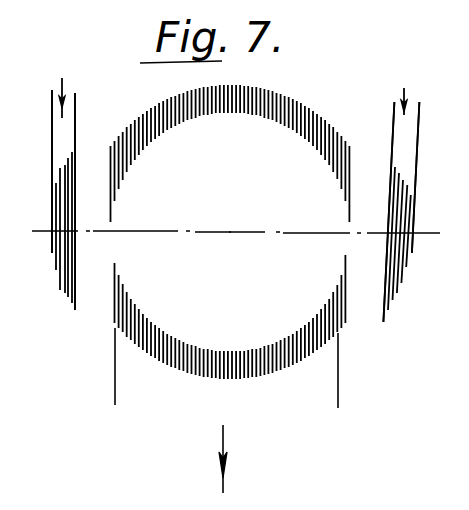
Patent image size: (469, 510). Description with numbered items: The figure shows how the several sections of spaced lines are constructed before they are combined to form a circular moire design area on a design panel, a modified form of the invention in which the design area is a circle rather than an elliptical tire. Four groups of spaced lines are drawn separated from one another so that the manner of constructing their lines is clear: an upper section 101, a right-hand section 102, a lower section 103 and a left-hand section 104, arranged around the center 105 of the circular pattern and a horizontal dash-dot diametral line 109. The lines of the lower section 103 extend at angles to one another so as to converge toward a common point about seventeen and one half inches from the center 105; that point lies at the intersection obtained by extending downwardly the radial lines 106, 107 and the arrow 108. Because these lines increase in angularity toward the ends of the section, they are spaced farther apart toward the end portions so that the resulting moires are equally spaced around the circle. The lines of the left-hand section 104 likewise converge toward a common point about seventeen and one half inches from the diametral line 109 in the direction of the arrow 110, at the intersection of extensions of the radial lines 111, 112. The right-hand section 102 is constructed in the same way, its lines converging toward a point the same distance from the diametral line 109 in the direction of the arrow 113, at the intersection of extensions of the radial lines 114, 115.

The section 101 is at (305, 100).
The right-hand section 102 is at (403, 303).
The lower section 103 is at (266, 385).
The left-hand section 104 is at (64, 304).
The center 105 is at (238, 232).
The radial line 106 is at (115, 398).
The radial line 107 is at (338, 385).
The arrow 108 is at (228, 470).
The dash-dot diametral line 109 is at (156, 229).
The arrow 110 is at (64, 92).
The radial line 111 is at (52, 126).
The radial line 112 is at (75, 132).
The arrow 113 is at (406, 103).
The radial line 114 is at (392, 129).
The radial line 115 is at (416, 147).